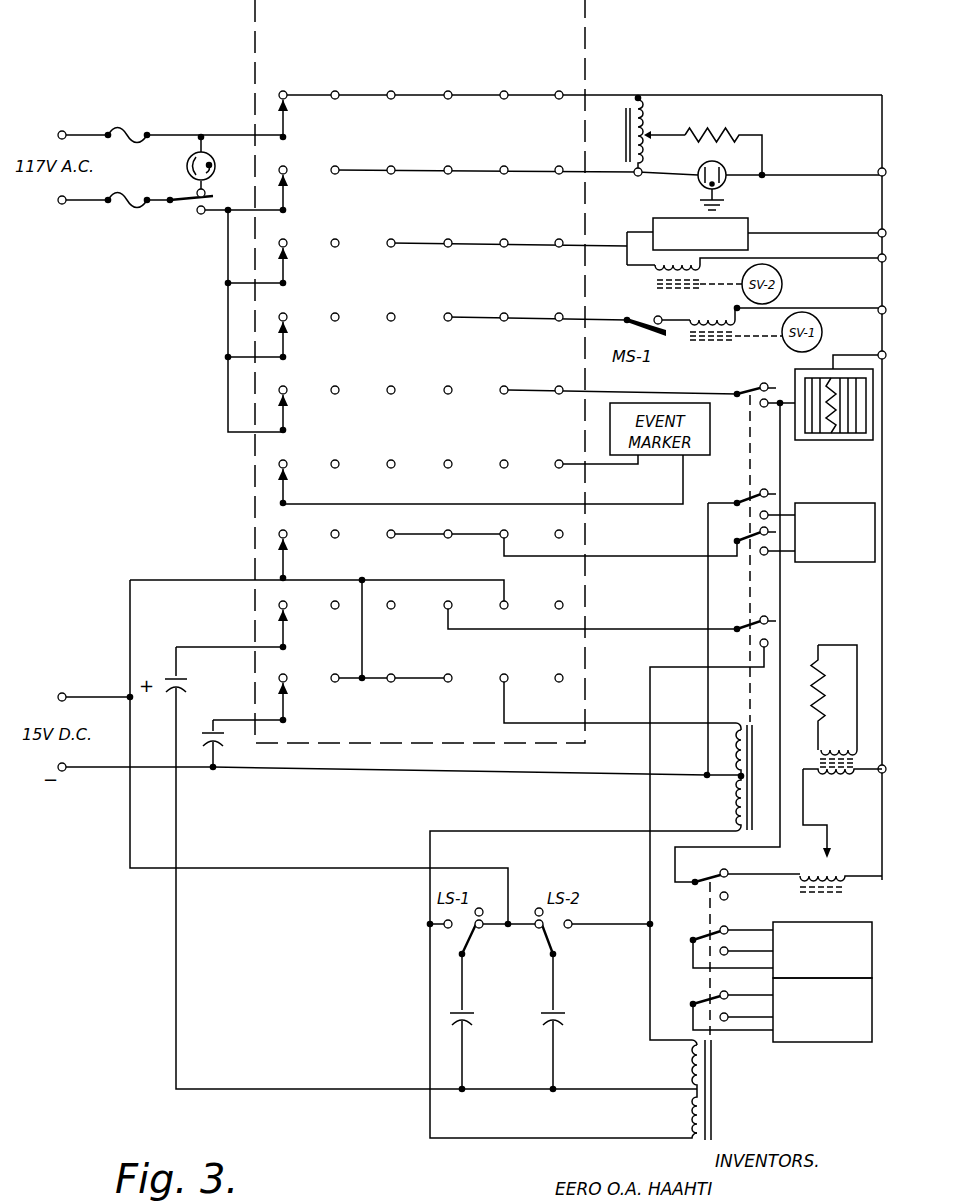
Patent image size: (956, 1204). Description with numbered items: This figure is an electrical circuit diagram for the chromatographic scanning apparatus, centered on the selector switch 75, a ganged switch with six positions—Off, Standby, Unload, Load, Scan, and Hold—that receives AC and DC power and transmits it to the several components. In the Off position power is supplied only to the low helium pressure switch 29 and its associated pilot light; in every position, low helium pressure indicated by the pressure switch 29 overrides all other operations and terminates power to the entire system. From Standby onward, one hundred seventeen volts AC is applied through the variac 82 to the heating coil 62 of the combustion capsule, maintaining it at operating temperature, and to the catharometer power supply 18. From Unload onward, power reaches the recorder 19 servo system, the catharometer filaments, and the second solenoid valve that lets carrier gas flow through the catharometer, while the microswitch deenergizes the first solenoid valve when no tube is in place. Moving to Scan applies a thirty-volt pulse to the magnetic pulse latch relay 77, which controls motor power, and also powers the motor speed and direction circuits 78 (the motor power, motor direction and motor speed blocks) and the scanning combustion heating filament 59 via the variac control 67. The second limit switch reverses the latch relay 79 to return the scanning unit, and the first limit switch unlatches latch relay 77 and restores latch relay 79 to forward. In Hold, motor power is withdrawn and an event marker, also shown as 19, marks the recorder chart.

The selector switch 75 is at (250, 63).
The low helium pressure switch 29 is at (190, 210).
The variac 82 is at (648, 118).
The heating coil 62 is at (738, 126).
The catharometer power supply 18 is at (726, 170).
The recorder 19 is at (742, 218).
The motor speed control potentiometers 78 is at (842, 503).
The scanning combustion heating filament 59 is at (823, 680).
The magnetic pulse latch relay 77 is at (756, 742).
The variac control 67 is at (847, 870).
The latch relay 79 is at (718, 1105).